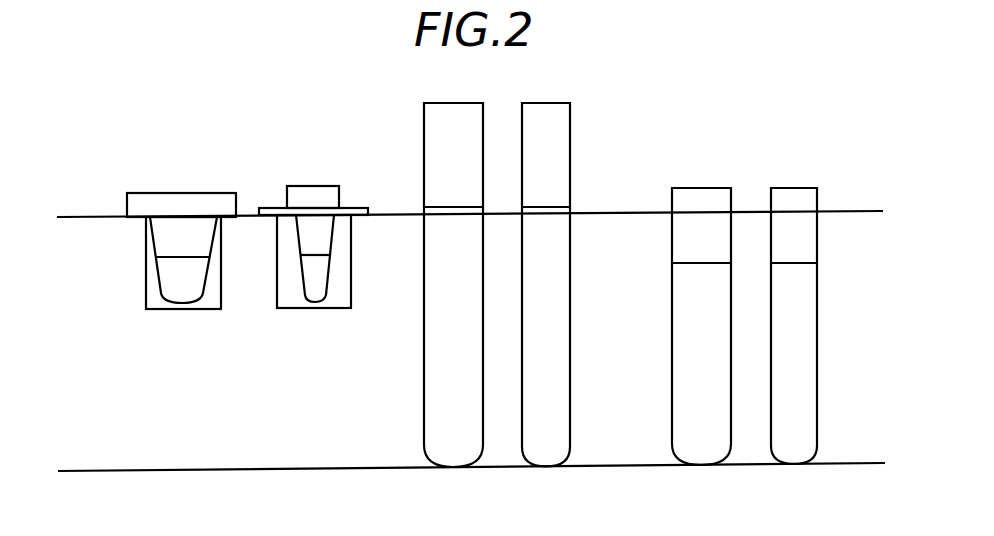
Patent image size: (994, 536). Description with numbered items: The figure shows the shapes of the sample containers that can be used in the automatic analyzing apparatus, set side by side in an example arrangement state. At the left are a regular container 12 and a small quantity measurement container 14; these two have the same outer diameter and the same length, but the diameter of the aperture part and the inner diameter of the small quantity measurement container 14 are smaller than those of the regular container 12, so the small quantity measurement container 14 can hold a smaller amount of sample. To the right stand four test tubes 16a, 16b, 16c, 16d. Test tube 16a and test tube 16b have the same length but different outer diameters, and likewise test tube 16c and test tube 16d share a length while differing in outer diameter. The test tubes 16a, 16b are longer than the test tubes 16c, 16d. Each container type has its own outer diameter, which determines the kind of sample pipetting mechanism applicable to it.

The regular container 12 is at (174, 202).
The small quantity measurement container 14 is at (316, 196).
The test tube 16a is at (453, 102).
The test tube 16b is at (538, 102).
The test tube 16c is at (703, 187).
The test tube 16d is at (788, 187).